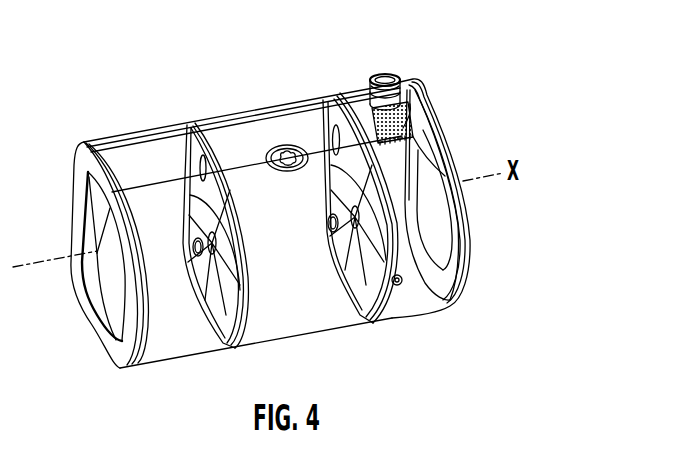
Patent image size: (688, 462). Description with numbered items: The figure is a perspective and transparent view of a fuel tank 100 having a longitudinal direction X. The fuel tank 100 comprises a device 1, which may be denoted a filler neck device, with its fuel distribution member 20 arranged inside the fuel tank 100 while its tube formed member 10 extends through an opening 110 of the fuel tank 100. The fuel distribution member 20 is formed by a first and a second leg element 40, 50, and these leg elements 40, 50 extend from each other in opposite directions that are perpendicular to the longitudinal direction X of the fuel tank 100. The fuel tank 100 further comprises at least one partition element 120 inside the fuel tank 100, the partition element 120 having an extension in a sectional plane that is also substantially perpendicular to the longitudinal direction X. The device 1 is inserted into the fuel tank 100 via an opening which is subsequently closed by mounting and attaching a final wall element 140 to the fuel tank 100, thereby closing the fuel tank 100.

The device 1 is at (416, 59).
The tube formed member 10 is at (385, 76).
The fuel distribution member 20 is at (403, 128).
The first leg element 40 is at (368, 94).
The second leg element 50 is at (402, 123).
The fuel tank 100 is at (132, 113).
The opening 110 is at (352, 74).
The partition element 120 is at (377, 288).
The final wall element 140 is at (467, 243).